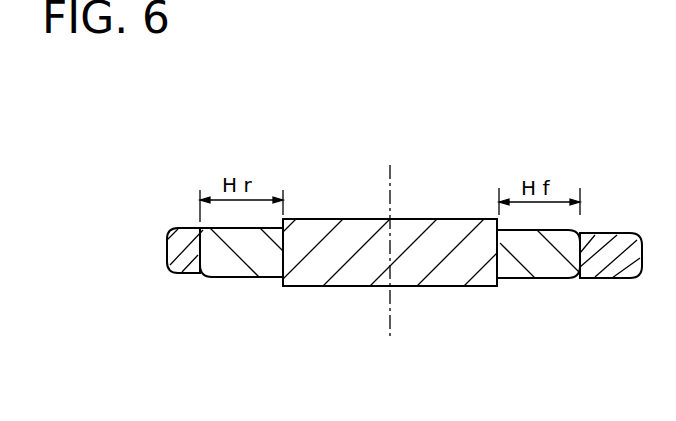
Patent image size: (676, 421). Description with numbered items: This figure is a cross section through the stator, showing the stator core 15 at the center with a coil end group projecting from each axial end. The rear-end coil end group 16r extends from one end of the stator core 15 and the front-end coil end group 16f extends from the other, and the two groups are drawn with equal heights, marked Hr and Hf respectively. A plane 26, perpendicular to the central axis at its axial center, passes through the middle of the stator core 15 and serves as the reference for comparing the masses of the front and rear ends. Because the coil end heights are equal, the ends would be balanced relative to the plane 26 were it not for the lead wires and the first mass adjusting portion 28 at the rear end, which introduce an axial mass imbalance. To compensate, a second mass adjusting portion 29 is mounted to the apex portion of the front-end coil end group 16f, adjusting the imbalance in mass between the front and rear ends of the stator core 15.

The stator core 15 is at (318, 283).
The rear-end coil end group 16r is at (226, 276).
The front-end coil end group 16f is at (550, 279).
The plane 26 is at (393, 199).
The first mass adjusting portion 28 is at (173, 232).
The second mass adjusting portion 29 is at (621, 242).